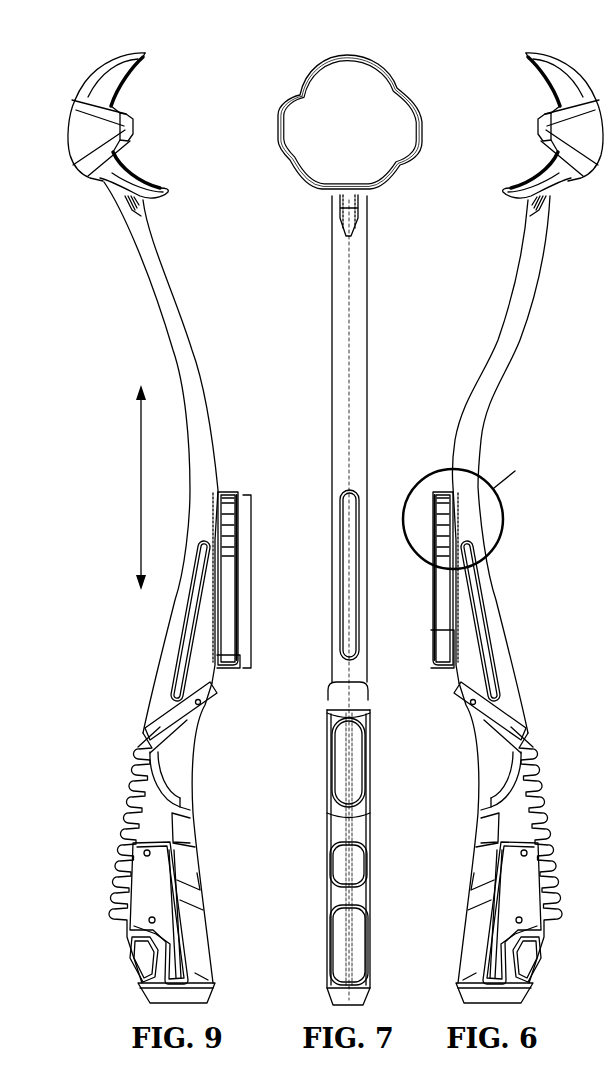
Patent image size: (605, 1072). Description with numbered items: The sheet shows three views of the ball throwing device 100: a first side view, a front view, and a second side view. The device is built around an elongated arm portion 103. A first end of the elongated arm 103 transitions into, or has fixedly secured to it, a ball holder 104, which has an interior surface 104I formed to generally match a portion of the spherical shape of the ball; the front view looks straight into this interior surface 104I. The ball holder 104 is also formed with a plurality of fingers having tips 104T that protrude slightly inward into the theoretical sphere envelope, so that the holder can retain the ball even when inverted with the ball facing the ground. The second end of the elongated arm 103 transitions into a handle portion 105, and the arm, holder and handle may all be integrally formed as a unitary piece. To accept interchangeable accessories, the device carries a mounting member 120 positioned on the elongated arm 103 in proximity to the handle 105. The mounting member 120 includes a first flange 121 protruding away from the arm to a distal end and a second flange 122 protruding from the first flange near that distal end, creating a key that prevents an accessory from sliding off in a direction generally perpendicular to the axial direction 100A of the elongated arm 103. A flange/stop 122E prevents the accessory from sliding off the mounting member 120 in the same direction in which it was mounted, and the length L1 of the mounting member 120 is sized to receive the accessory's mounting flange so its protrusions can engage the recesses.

In FIG. 9, the ball throwing device 100 is at (202, 330).
In FIG. 7, the ball throwing device 100 is at (378, 334).
In FIG. 6, the ball throwing device 100 is at (510, 334).
In FIG. 9, the axial direction 100A is at (140, 497).
In FIG. 9, the elongated arm portion 103 is at (130, 725).
In FIG. 9, the ball holder 104 is at (72, 197).
In FIG. 9, the tips 104T is at (150, 58).
In FIG. 7, the tips 104T is at (280, 127).
In FIG. 7, the interior surface 104I is at (345, 113).
In FIG. 9, the handle portion 105 is at (130, 1003).
In FIG. 9, the mounting member 120 is at (229, 490).
In FIG. 6, the first flange 121 is at (448, 620).
In FIG. 7, the second flange 122 is at (349, 538).
In FIG. 6, the second flange 122 is at (441, 641).
In FIG. 9, the flange/stop 122E is at (218, 661).
In FIG. 9, the length of the mounting member L1 is at (251, 578).